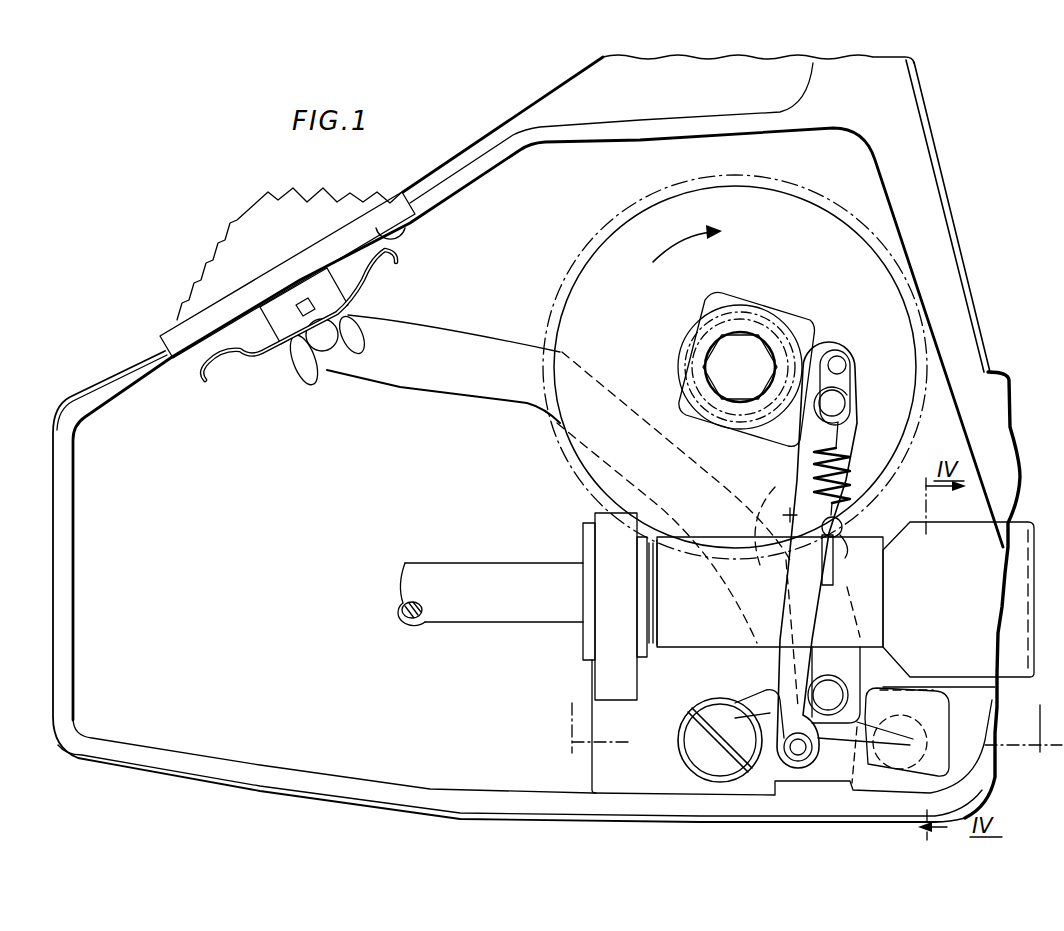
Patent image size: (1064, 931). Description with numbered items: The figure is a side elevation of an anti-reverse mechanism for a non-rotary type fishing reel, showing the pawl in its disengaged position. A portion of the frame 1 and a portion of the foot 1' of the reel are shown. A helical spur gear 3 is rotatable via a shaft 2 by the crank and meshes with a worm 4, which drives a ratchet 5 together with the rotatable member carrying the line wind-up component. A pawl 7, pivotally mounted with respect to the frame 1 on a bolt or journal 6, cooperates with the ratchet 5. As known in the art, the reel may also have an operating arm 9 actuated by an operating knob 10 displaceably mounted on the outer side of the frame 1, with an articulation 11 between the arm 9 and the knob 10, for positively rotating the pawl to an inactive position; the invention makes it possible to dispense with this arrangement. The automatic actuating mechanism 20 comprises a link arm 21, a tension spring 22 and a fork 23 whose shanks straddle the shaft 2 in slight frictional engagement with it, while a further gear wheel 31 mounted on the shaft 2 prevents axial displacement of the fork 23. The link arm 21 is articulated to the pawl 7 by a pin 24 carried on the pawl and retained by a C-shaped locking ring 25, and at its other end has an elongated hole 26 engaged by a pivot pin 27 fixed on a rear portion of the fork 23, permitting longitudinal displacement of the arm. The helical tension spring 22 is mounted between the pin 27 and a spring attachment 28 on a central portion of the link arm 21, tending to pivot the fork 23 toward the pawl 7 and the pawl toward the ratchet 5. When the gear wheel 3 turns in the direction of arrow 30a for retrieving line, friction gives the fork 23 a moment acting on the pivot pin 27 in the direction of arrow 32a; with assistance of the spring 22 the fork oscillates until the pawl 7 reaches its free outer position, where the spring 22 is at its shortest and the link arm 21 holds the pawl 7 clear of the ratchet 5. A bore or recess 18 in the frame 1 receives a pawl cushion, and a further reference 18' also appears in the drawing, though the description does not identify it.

The frame 1 is at (536, 438).
The foot 1' is at (677, 133).
The shaft 2 is at (727, 358).
The helical spur gear 3 is at (895, 300).
The worm 4 is at (722, 633).
The ratchet 5 is at (953, 555).
The bolt or journal 6 is at (690, 733).
The pawl 7 is at (985, 743).
The operating arm 9 is at (421, 370).
The operating knob 10 is at (311, 213).
The articulation 11 is at (325, 333).
The bore or recess 18 is at (758, 519).
The spring anchor 18' is at (868, 524).
The automatic actuating mechanism 20 is at (785, 598).
The link arm 21 is at (790, 622).
The tension spring 22 is at (850, 480).
The fork 23 is at (748, 429).
The pin 24 is at (782, 740).
The C-shaped locking ring 25 is at (818, 757).
The elongated hole 26 is at (840, 366).
The pivot pin 27 is at (846, 400).
The spring attachment 28 is at (832, 572).
The arrow 30a is at (655, 262).
The further gear wheel 31 is at (683, 371).
The arrow 32a is at (836, 328).